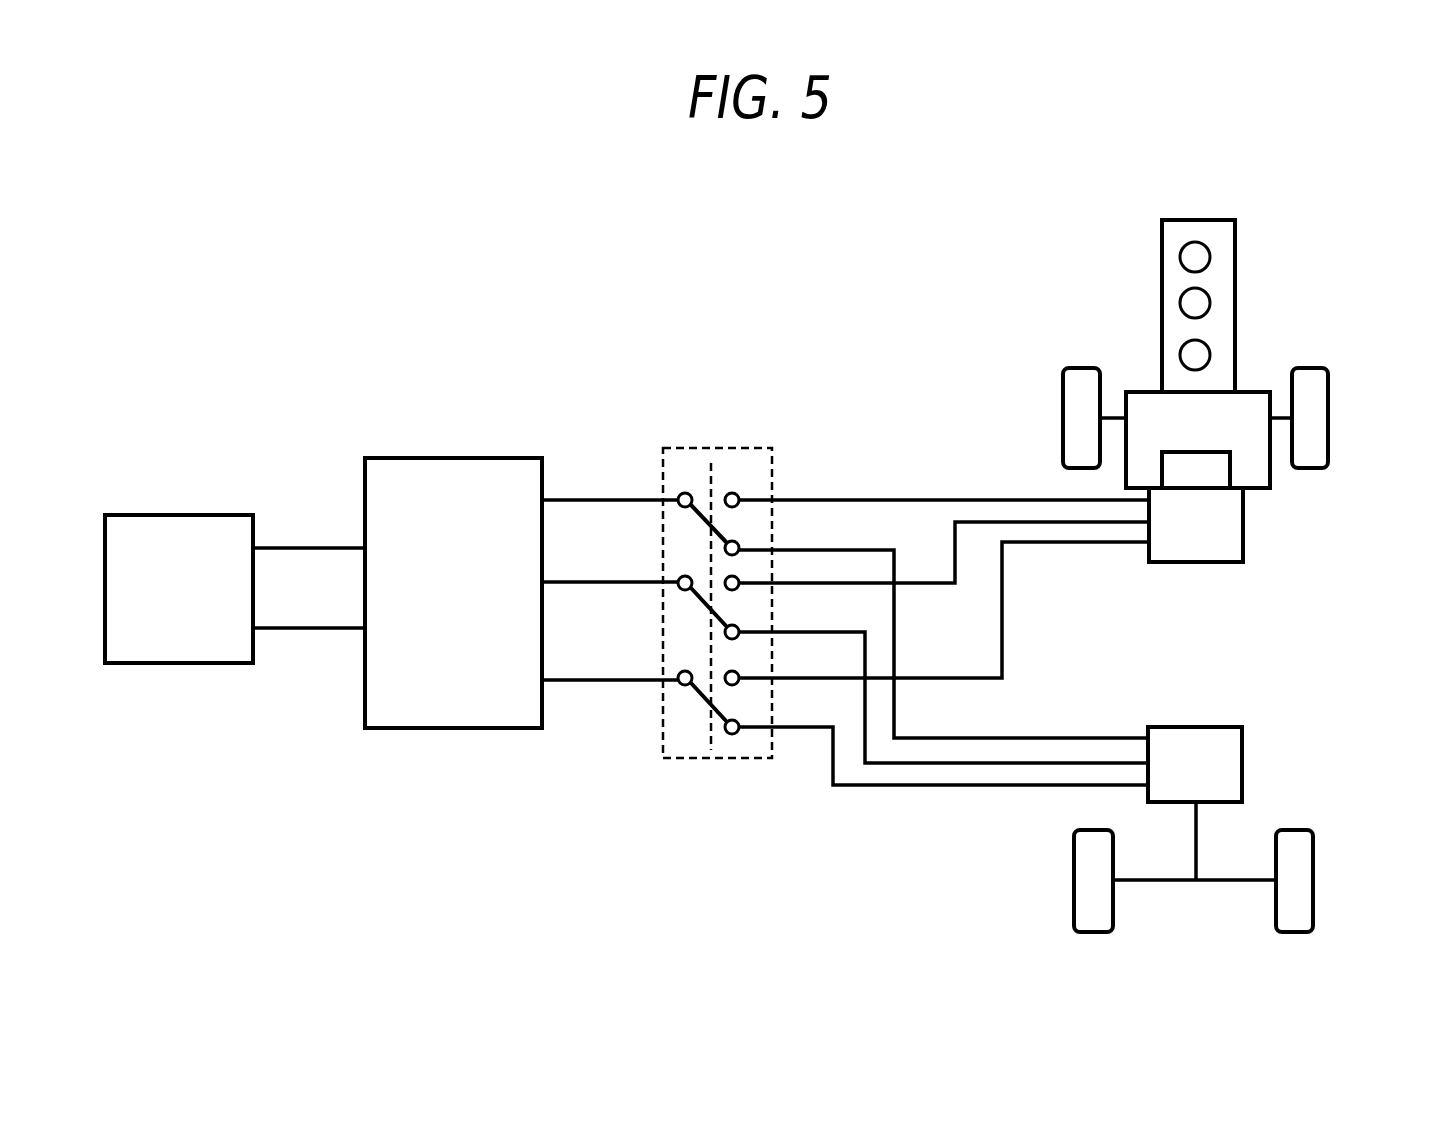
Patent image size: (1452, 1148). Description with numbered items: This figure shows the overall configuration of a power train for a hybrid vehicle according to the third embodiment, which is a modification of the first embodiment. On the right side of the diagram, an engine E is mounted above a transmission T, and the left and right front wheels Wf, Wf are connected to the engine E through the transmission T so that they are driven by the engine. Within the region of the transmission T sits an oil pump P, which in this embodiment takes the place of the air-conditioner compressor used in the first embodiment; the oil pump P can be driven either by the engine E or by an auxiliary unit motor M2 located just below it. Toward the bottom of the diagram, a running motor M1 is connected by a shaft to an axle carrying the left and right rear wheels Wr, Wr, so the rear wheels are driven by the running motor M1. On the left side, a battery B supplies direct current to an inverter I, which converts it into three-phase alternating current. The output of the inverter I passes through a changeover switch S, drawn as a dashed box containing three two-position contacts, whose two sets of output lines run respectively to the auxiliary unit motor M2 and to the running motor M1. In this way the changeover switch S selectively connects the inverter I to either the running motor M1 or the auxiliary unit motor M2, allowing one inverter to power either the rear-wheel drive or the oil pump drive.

The battery B is at (178, 513).
The inverter I is at (455, 456).
The changeover switch S is at (718, 448).
The engine E is at (1238, 302).
The transmission T is at (1147, 392).
The oil pump P is at (1212, 462).
The front wheels Wf is at (1383, 420).
The auxiliary unit motor M2 is at (1199, 563).
The running motor M1 is at (1243, 765).
The rear wheels Wr is at (1365, 880).